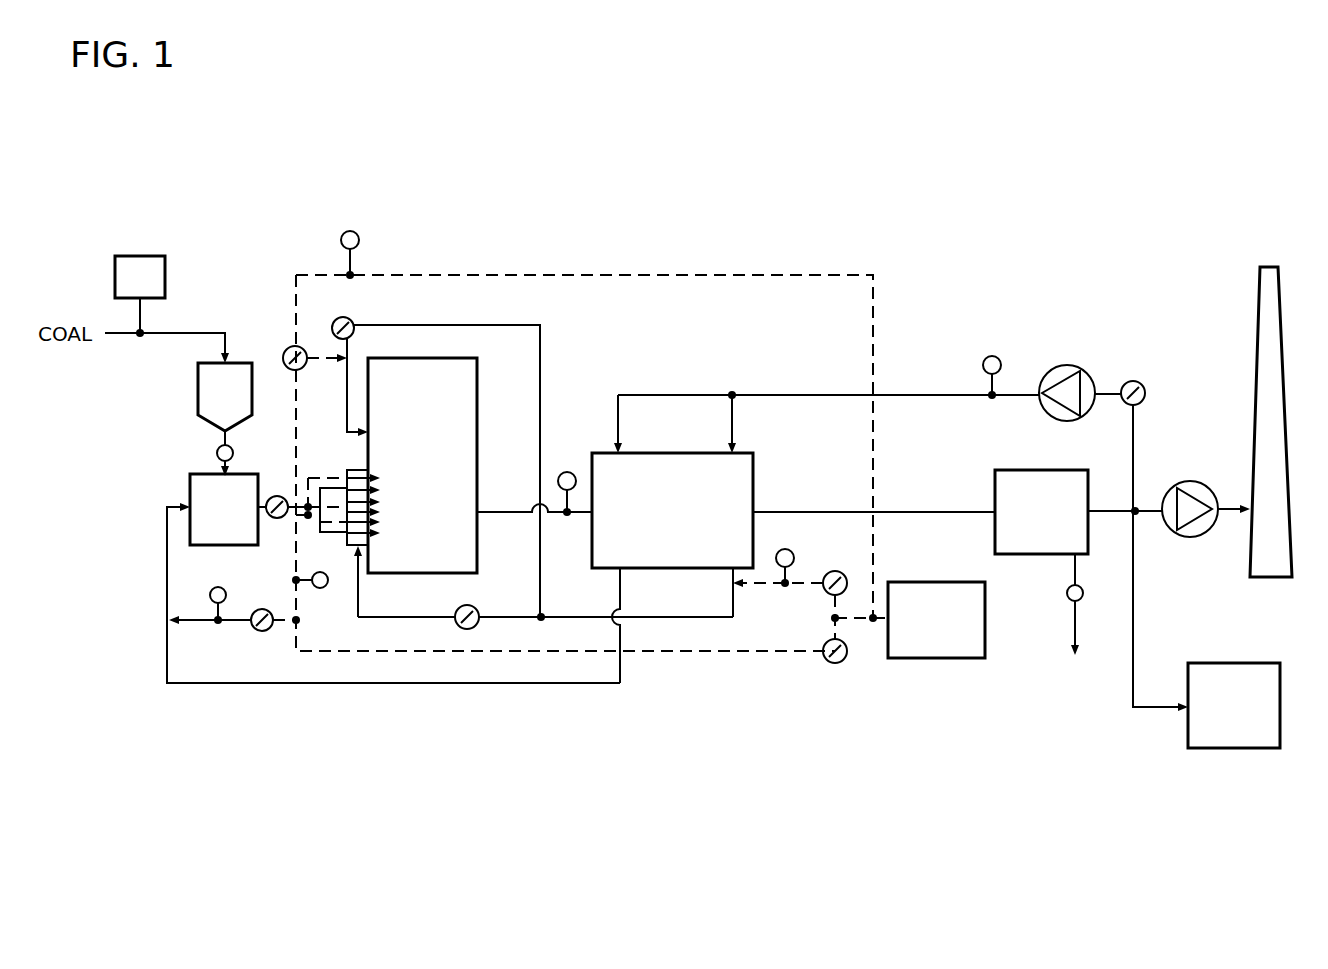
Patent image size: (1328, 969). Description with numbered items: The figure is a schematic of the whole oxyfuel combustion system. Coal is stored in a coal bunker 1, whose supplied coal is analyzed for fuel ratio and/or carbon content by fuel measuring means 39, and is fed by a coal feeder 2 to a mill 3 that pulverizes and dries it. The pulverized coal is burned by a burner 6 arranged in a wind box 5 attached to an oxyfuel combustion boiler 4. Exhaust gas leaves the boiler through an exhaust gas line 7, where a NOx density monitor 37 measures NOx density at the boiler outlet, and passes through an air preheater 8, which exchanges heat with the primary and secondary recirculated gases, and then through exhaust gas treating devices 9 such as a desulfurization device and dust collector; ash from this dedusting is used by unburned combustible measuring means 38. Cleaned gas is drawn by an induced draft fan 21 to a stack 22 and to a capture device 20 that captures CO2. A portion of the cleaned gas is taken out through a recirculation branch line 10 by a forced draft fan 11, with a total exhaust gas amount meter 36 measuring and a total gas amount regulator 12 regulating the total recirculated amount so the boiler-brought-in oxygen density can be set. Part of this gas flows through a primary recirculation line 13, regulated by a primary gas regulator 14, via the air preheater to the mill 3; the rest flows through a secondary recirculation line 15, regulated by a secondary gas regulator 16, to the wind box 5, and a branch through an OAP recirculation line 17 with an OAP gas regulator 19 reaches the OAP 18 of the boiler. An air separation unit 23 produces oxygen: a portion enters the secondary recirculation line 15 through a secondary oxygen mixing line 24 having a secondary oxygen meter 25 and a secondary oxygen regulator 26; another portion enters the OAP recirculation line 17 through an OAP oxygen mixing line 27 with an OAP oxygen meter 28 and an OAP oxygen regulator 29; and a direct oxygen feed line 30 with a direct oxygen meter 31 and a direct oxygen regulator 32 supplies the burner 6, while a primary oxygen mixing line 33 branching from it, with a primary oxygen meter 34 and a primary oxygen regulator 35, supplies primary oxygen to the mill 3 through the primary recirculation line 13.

The coal bunker 1 is at (213, 398).
The coal feeder 2 is at (215, 450).
The mill 3 is at (212, 517).
The oxyfuel combustion boiler 4 is at (440, 475).
The wind box 5 is at (347, 468).
The burner 6 is at (337, 532).
The exhaust gas line 7 is at (503, 510).
The air preheater 8 is at (685, 515).
The exhaust gas treating devices 9 is at (1028, 521).
The recirculation branch line 10 is at (1140, 430).
The forced draft fan 11 is at (1065, 365).
The total gas amount regulator 12 is at (1145, 386).
The primary recirculation line 13 is at (393, 685).
The primary gas regulator 14 is at (277, 496).
The secondary recirculation line 15 is at (569, 615).
The secondary gas regulator 16 is at (475, 606).
The OAP recirculation line 17 is at (545, 343).
The OAP 18 is at (372, 430).
The OAP gas regulator 19 is at (353, 321).
The capture device 20 is at (1218, 722).
The induced draft fan 21 is at (1190, 538).
The stack 22 is at (1268, 266).
The air separation unit 23 is at (918, 634).
The secondary oxygen mixing line 24 is at (768, 590).
The secondary oxygen meter 25 is at (793, 552).
The secondary oxygen regulator 26 is at (840, 571).
The OAP oxygen mixing line 27 is at (532, 274).
The OAP oxygen meter 28 is at (350, 231).
The OAP oxygen regulator 29 is at (288, 347).
The direct oxygen feed line 30 is at (678, 652).
The direct oxygen meter 31 is at (323, 589).
The direct oxygen regulator 32 is at (835, 664).
The primary oxygen mixing line 33 is at (235, 625).
The primary oxygen meter 34 is at (213, 588).
The primary oxygen regulator 35 is at (264, 608).
The total exhaust gas amount meter 36 is at (992, 355).
The NOx density monitor 37 is at (567, 471).
The unburned combustible measuring means 38 is at (1066, 603).
The fuel measuring means 39 is at (140, 256).